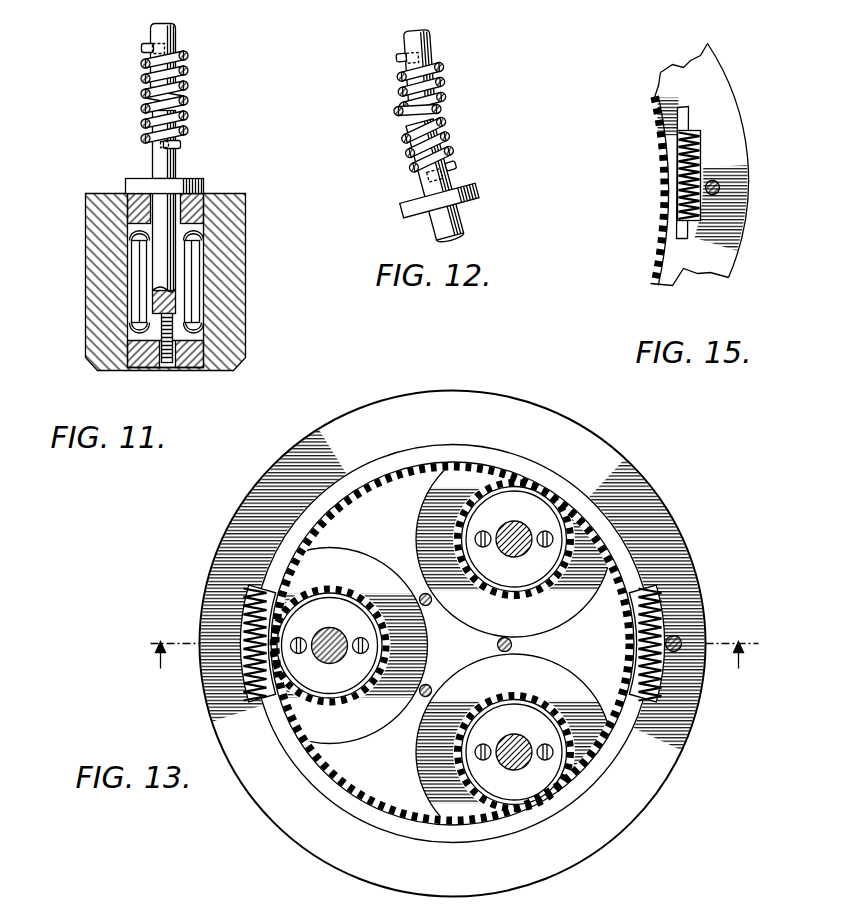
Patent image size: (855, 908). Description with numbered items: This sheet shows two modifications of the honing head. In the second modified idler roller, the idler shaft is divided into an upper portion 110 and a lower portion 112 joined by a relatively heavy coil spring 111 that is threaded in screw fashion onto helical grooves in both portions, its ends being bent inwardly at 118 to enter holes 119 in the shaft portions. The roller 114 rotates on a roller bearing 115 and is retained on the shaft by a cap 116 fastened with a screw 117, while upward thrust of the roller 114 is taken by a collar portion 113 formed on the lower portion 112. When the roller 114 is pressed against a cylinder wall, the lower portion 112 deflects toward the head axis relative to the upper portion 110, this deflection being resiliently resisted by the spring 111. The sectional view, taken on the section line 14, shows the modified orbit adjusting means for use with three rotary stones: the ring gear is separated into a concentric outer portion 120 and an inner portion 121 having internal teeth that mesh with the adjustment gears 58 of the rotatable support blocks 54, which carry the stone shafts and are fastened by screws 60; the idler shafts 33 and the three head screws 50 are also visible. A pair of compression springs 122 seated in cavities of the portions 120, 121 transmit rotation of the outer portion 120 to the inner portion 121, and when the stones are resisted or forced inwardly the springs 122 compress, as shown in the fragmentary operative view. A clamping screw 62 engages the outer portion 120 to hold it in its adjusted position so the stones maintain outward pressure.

In FIG. 11, the upper portion 110 is at (177, 47).
In FIG. 12, the upper portion 110 is at (432, 44).
In FIG. 11, the coil spring 111 is at (187, 86).
In FIG. 12, the coil spring 111 is at (438, 112).
In FIG. 11, the lower portion 112 is at (176, 166).
In FIG. 12, the lower portion 112 is at (452, 178).
In FIG. 11, the collar portion 113 is at (205, 183).
In FIG. 12, the collar portion 113 is at (470, 200).
In FIG. 11, the roller 114 is at (92, 242).
In FIG. 11, the roller bearing 115 is at (195, 262).
In FIG. 11, the cap 116 is at (195, 372).
In FIG. 11, the screw 117 is at (172, 372).
In FIG. 11, the inwardly bent spring ends 118 is at (141, 47).
In FIG. 12, the inwardly bent spring ends 118 is at (398, 62).
In FIG. 11, the holes 119 is at (153, 56).
In FIG. 12, the holes 119 is at (410, 50).
In FIG. 15, the outer portion 120 is at (722, 267).
In FIG. 13, the outer portion 120 is at (648, 495).
In FIG. 15, the inner portion 121 is at (660, 242).
In FIG. 13, the inner portion 121 is at (613, 547).
In FIG. 15, the compression springs 122 is at (678, 158).
In FIG. 13, the compression springs 122 is at (660, 608).
In FIG. 15, the clamping screw 62 is at (717, 182).
In FIG. 13, the clamping screw 62 is at (682, 642).
In FIG. 13, the adjustment gear 58 is at (512, 497).
In FIG. 13, the idler shafts 33 is at (527, 530).
In FIG. 13, the screws 60 is at (484, 548).
In FIG. 13, the screws 50 is at (513, 645).
In FIG. 13, the support blocks 54 is at (582, 586).
In FIG. 13, the section line 14 is at (450, 674).